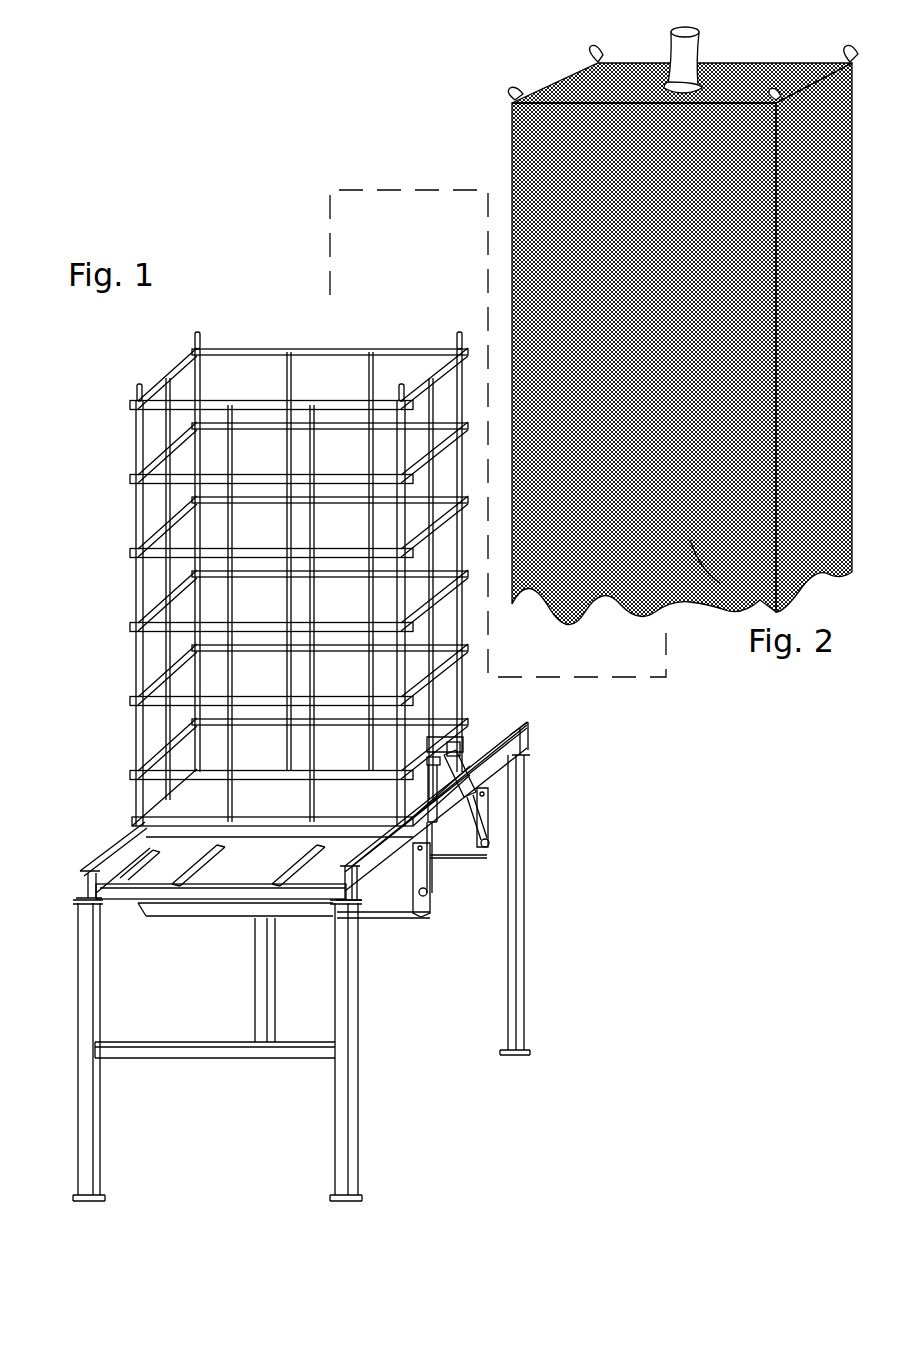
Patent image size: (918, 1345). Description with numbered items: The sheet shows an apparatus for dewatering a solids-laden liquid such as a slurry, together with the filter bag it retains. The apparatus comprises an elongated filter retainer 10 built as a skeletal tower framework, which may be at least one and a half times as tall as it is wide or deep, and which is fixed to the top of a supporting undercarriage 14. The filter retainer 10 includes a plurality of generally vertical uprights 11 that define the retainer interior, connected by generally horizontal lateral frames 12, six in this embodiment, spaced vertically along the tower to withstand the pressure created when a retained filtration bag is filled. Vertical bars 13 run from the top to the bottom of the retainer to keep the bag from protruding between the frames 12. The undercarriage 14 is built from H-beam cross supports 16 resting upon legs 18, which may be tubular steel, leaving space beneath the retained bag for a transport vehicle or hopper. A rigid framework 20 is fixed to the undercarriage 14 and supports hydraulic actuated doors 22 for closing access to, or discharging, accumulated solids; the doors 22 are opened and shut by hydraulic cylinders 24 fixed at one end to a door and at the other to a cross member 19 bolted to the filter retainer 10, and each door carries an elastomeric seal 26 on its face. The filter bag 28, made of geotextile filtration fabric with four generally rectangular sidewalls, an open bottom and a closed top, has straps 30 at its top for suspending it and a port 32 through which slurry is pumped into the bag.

In FIG. 1, the filter retainer 10 is at (190, 320).
In FIG. 1, the uprights 11 is at (143, 462).
In FIG. 1, the lateral frames 12 is at (305, 405).
In FIG. 1, the vertical bars 13 is at (428, 403).
In FIG. 1, the supporting undercarriage 14 is at (527, 705).
In FIG. 1, the H-beam cross supports 16 is at (92, 868).
In FIG. 1, the legs 18 is at (258, 970).
In FIG. 1, the cross member 19 is at (462, 742).
In FIG. 1, the framework 20 is at (252, 865).
In FIG. 1, the hydraulic actuated doors 22 is at (430, 902).
In FIG. 1, the hydraulic cylinders 24 is at (473, 800).
In FIG. 1, the elastomeric seal 26 is at (373, 912).
In FIG. 2, the filter bag 28 is at (720, 583).
In FIG. 2, the straps 30 is at (587, 47).
In FIG. 2, the port 32 is at (683, 63).